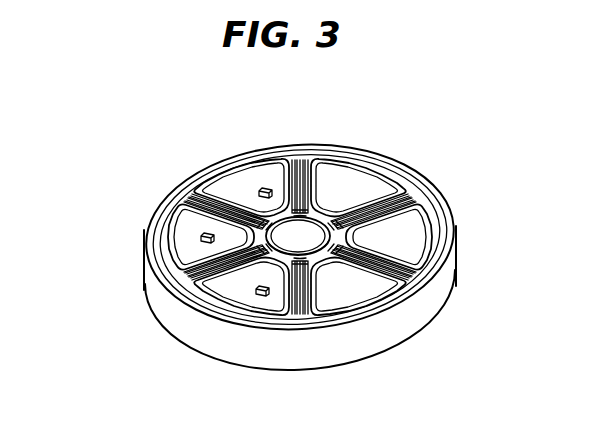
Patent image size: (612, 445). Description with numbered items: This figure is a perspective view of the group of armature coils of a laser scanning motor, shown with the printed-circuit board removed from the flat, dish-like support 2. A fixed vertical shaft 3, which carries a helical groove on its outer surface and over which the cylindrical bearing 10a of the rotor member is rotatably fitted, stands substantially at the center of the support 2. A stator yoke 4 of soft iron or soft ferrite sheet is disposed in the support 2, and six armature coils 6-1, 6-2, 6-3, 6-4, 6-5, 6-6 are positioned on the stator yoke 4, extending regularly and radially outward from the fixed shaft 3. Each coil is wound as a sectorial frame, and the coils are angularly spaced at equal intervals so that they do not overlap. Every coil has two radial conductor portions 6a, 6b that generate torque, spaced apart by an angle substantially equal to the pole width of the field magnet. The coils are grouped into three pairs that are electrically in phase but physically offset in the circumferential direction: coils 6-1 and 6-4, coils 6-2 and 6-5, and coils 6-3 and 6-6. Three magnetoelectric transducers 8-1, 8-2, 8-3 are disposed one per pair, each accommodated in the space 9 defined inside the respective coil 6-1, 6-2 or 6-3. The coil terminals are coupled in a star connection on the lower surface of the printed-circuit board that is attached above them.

The support 2 is at (150, 292).
The fixed vertical shaft 3 is at (300, 232).
The stator yoke 4 is at (410, 243).
The space 9 is at (180, 238).
The radial conductor portion 6a is at (183, 290).
The radial conductor portion 6b is at (297, 313).
The armature coil 6-1 is at (232, 303).
The armature coil 6-2 is at (164, 221).
The armature coil 6-3 is at (252, 163).
The armature coil 6-4 is at (370, 175).
The armature coil 6-5 is at (437, 248).
The armature coil 6-6 is at (320, 314).
The magnetoelectric transducer 8-1 is at (254, 298).
The magnetoelectric transducer 8-2 is at (196, 228).
The magnetoelectric transducer 8-3 is at (266, 192).
The cylindrical bearing 10a is at (332, 242).